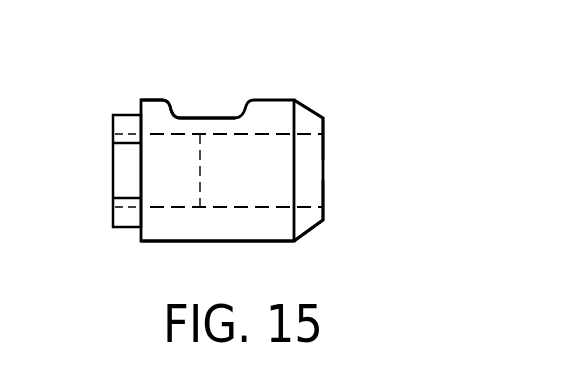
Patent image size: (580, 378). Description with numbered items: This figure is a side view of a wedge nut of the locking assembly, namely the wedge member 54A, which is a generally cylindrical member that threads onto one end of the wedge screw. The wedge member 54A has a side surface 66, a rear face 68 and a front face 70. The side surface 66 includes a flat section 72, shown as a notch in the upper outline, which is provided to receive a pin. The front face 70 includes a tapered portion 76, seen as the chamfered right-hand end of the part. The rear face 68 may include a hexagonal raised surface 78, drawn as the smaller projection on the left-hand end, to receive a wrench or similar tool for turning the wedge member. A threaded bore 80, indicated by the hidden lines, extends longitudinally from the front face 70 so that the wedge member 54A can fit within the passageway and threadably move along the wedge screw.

The wedge member 54A is at (317, 103).
The side surface 66 is at (215, 225).
The rear face 68 is at (140, 236).
The front face 70 is at (323, 202).
The flat section 72 is at (235, 116).
The tapered portion 76 is at (313, 152).
The hexagonal raised surface 78 is at (128, 176).
The threaded bore 80 is at (168, 135).